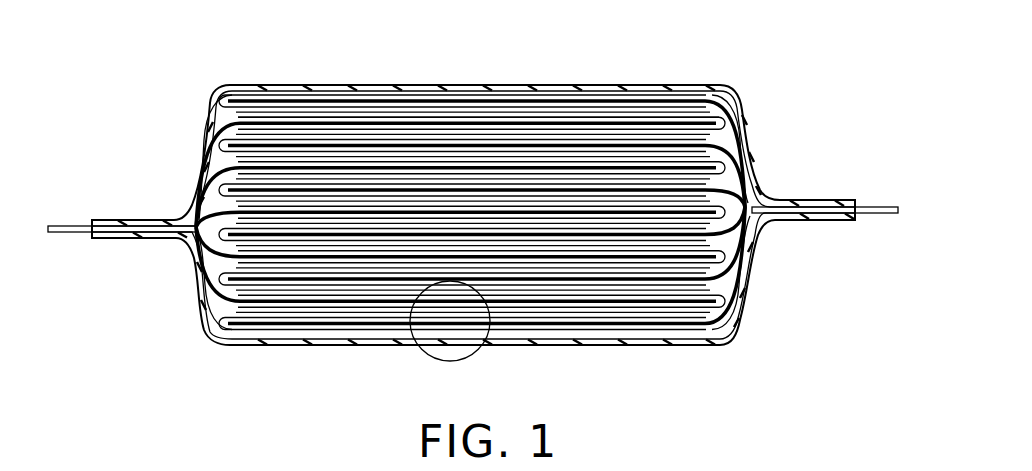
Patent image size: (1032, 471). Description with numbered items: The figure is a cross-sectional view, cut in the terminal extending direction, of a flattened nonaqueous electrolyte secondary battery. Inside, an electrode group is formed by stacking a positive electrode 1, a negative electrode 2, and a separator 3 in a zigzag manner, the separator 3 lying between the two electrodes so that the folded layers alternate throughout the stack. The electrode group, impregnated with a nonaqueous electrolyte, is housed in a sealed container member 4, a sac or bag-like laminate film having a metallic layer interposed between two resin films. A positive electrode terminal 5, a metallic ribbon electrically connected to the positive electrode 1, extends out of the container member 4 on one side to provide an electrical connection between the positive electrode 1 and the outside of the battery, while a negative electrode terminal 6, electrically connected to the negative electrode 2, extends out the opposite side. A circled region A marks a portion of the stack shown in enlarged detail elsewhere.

The positive electrode 1 is at (313, 122).
The negative electrode 2 is at (352, 98).
The separator 3 is at (386, 116).
The container member 4 is at (503, 83).
The positive electrode terminal 5 is at (68, 225).
The negative electrode terminal 6 is at (877, 205).
The region A (enlarged portion) A is at (477, 353).